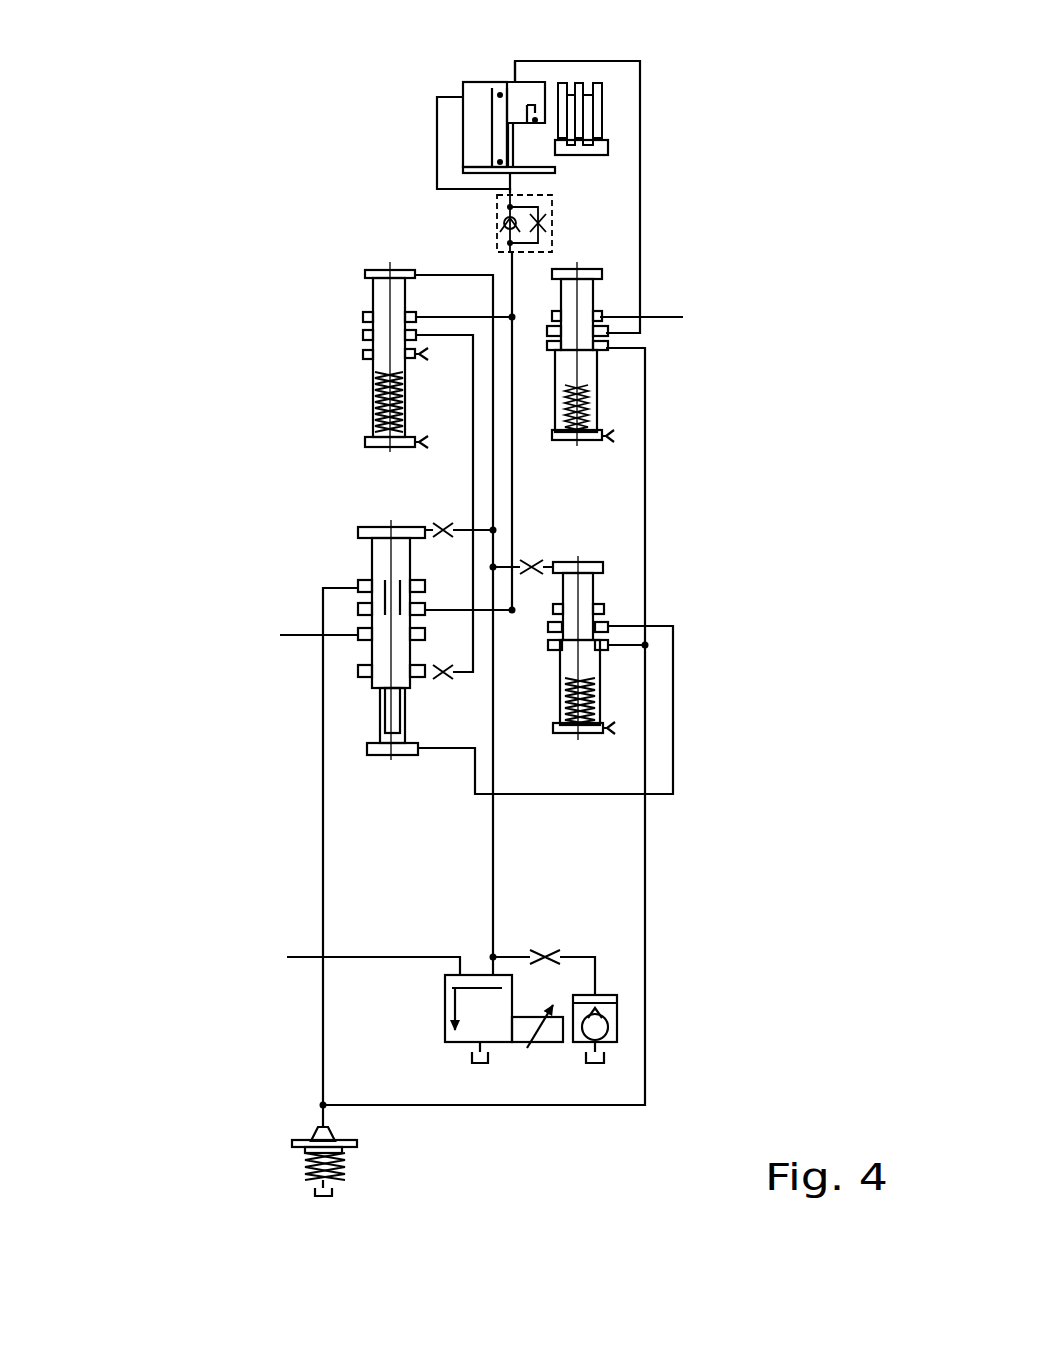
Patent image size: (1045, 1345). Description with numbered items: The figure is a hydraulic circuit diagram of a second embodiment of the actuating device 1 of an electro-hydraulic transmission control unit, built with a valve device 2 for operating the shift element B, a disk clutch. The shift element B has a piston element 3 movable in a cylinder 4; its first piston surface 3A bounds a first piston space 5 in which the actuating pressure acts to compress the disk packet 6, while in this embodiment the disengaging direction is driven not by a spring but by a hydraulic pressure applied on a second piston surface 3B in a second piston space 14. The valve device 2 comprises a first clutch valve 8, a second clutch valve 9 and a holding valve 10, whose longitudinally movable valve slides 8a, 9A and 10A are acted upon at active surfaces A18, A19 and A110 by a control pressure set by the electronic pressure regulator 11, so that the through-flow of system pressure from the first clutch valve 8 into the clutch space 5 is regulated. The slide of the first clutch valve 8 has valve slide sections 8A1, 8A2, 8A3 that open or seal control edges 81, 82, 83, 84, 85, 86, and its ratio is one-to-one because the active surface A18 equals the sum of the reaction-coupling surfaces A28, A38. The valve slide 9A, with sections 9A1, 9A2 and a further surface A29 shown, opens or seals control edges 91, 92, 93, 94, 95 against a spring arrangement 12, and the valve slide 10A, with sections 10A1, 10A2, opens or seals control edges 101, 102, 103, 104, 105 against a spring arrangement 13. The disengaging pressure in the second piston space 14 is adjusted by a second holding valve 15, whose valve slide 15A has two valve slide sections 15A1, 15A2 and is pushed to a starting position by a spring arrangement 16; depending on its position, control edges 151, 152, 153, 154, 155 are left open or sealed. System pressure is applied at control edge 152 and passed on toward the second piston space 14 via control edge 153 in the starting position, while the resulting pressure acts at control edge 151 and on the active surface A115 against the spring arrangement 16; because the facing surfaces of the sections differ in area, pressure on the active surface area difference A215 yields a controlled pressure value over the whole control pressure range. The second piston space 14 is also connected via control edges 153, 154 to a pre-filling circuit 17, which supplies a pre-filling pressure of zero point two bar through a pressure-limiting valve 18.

The actuating device 1 is at (115, 92).
The valve device 2 is at (298, 340).
The piston element 3 is at (503, 128).
The first piston surface 3A is at (490, 142).
The second piston surface 3B is at (510, 117).
The cylinder 4 is at (502, 93).
The first piston space 5 is at (482, 157).
The disk packet 6 is at (617, 92).
The first clutch valve 8 is at (325, 560).
The valve slide section 8A1 is at (358, 532).
The valve slide section 8A2 is at (358, 632).
The valve slide section 8A3 is at (388, 665).
The valve slide 8a is at (343, 610).
The control edge 81 is at (380, 555).
The control edge 82 is at (358, 586).
The control edge 83 is at (370, 600).
The control edge 84 is at (360, 673).
The control edge 85 is at (378, 681).
The control edge 86 is at (378, 688).
The second clutch valve 9 is at (688, 633).
The valve slide 9A is at (610, 673).
The valve slide section 9A1 is at (600, 582).
The valve slide section 9A2 is at (605, 700).
The control edge 91 is at (575, 572).
The control edge 92 is at (600, 607).
The control edge 93 is at (610, 628).
The control edge 94 is at (612, 650).
The control edge 95 is at (612, 737).
The holding valve 10 is at (375, 390).
The valve slide 10A is at (360, 298).
The valve slide section 10A1 is at (365, 282).
The valve slide section 10A2 is at (355, 395).
The control edge 101 is at (378, 285).
The control edge 102 is at (363, 317).
The control edge 103 is at (363, 335).
The control edge 104 is at (365, 355).
The control edge 105 is at (367, 443).
The electronic pressure regulator 11 is at (450, 990).
The spring arrangement 12 is at (640, 795).
The spring arrangement 13 is at (372, 420).
The second piston space 14 is at (462, 88).
The second holding valve 15 is at (668, 386).
The valve slide 15A is at (612, 380).
The valve slide section 15A1 is at (604, 326).
The valve slide section 15A2 is at (604, 420).
The control edge 151 is at (600, 311).
The control edge 152 is at (606, 330).
The control edge 153 is at (608, 350).
The control edge 154 is at (600, 375).
The control edge 155 is at (612, 442).
The spring arrangement 16 is at (605, 438).
The pre-filling circuit 17 is at (422, 1100).
The pressure-limiting valve 18 is at (291, 1115).
The active surface A18 is at (365, 530).
The active surface A19 is at (580, 565).
The reaction-coupling surface A28 is at (385, 668).
The effective surface A29 is at (610, 622).
The reaction-coupling surface A38 is at (390, 680).
The active surface A110 is at (365, 275).
The active surface A115 is at (582, 298).
The active surface area difference A215 is at (606, 334).
The shift element B is at (433, 51).